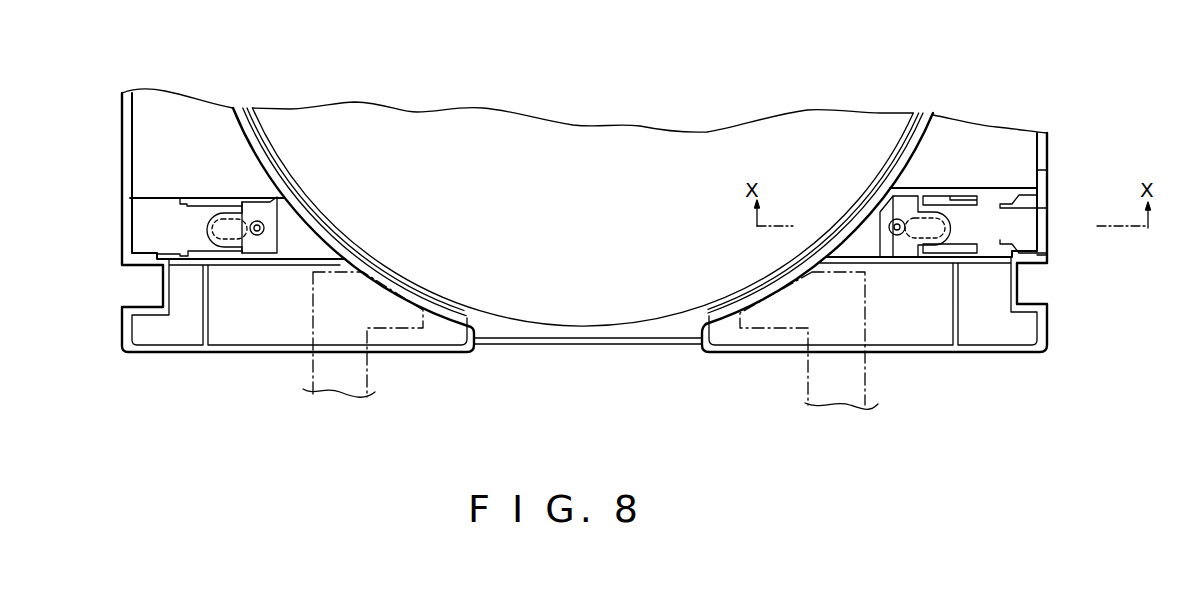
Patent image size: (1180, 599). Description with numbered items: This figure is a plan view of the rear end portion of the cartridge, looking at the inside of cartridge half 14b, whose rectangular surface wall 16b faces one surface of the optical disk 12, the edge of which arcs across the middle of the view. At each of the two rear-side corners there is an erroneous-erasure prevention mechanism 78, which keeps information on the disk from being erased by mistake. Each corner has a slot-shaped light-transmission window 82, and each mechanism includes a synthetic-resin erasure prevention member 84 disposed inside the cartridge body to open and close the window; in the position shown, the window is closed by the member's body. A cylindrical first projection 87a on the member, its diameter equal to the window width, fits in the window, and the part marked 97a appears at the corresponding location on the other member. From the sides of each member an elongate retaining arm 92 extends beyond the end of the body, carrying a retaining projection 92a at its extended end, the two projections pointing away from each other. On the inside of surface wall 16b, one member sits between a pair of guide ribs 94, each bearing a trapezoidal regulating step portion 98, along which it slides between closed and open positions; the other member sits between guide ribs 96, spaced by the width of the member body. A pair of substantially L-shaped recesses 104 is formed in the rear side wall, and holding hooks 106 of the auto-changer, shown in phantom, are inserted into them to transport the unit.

The optical disk 12 is at (415, 122).
The cartridge half 14b is at (405, 353).
The surface wall 16b is at (678, 332).
The erroneous-erasure prevention mechanism 78 is at (220, 176).
The light-transmission window 82 is at (241, 249).
The erasure prevention member 84 is at (305, 225).
The first projection 87a is at (896, 224).
The retaining arm 92 is at (198, 203).
The retaining projection 92a is at (147, 198).
The guide rib 94 is at (853, 255).
The guide rib 96 is at (183, 198).
The pivot pin 97a is at (259, 237).
The trapezoidal regulating step portion 98 is at (1037, 210).
The L-shaped recess 104 is at (210, 330).
The holding hook 106 is at (320, 378).